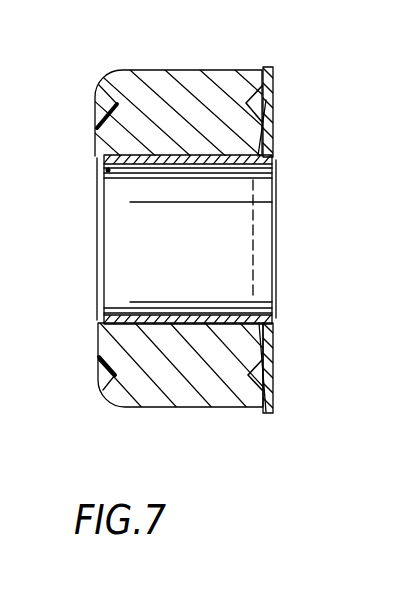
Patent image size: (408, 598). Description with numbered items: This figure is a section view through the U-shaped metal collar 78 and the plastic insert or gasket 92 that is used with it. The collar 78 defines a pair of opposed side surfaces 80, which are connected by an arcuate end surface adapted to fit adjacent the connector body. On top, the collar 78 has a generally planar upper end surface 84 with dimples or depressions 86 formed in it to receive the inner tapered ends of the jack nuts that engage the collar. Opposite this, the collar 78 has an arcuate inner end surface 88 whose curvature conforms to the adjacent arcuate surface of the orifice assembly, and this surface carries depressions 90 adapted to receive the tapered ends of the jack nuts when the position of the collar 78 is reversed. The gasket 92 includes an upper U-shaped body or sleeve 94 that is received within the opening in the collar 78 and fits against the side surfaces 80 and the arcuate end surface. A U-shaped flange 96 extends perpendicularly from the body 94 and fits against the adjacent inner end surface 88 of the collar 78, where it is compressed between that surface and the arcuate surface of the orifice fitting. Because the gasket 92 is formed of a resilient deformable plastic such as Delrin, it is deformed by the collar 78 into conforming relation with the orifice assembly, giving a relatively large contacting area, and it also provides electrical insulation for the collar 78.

The U-shaped metal collar 78 is at (188, 60).
The opposed side surfaces 80 is at (162, 313).
The upper end surface 84 is at (97, 345).
The dimples or depressions 86 is at (107, 112).
The arcuate inner end surface 88 is at (267, 343).
The depressions 90 is at (267, 100).
The plastic insert or gasket 92 is at (108, 171).
The U-shaped body or sleeve 94 is at (223, 313).
The U-shaped flange 96 is at (268, 132).